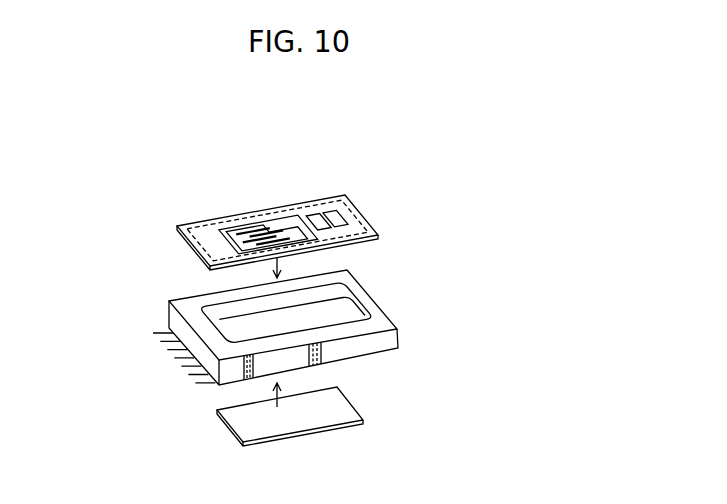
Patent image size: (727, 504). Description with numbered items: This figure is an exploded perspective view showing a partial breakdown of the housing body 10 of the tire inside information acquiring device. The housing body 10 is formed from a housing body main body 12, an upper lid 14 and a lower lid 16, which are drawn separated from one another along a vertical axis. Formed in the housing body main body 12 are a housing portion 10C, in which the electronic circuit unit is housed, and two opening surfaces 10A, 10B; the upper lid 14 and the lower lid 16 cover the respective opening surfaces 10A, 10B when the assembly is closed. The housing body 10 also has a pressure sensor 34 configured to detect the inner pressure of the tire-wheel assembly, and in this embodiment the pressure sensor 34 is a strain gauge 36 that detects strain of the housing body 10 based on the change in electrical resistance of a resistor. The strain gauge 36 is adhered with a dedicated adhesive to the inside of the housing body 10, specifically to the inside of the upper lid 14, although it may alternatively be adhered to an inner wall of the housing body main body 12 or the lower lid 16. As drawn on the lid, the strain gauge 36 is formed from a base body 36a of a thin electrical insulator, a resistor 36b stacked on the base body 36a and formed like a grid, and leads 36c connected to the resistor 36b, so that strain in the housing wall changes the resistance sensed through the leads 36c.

The housing body 10 is at (487, 203).
The opening surface 10A is at (335, 303).
The opening surface 10B is at (329, 328).
The housing portion 10C is at (237, 333).
The housing body main body 12 is at (284, 309).
The upper lid 14 is at (323, 190).
The lower lid 16 is at (358, 403).
The pressure sensor 34 is at (355, 209).
The strain gauge 36 is at (263, 182).
The base body 36a is at (227, 231).
The resistor 36b is at (256, 228).
The leads 36c is at (316, 190).